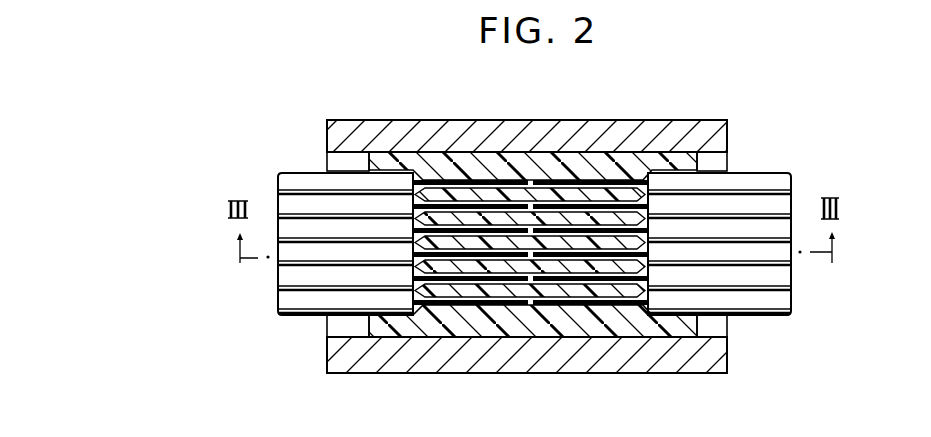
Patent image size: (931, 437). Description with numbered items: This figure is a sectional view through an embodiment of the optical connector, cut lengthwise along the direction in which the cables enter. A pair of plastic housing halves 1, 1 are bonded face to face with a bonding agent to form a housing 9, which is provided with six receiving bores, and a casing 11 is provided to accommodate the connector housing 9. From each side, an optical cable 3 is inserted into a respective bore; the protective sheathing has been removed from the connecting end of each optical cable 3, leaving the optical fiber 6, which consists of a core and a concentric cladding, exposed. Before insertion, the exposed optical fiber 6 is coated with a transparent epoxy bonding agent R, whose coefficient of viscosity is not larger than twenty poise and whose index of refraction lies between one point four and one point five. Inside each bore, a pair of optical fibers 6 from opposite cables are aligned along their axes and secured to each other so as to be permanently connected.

The housing half 1 is at (547, 330).
The optical cable 3 is at (295, 166).
The optical fiber 6 is at (437, 181).
The housing 9 is at (500, 340).
The casing 11 is at (670, 362).
The transparent epoxy bonding agent R is at (539, 180).